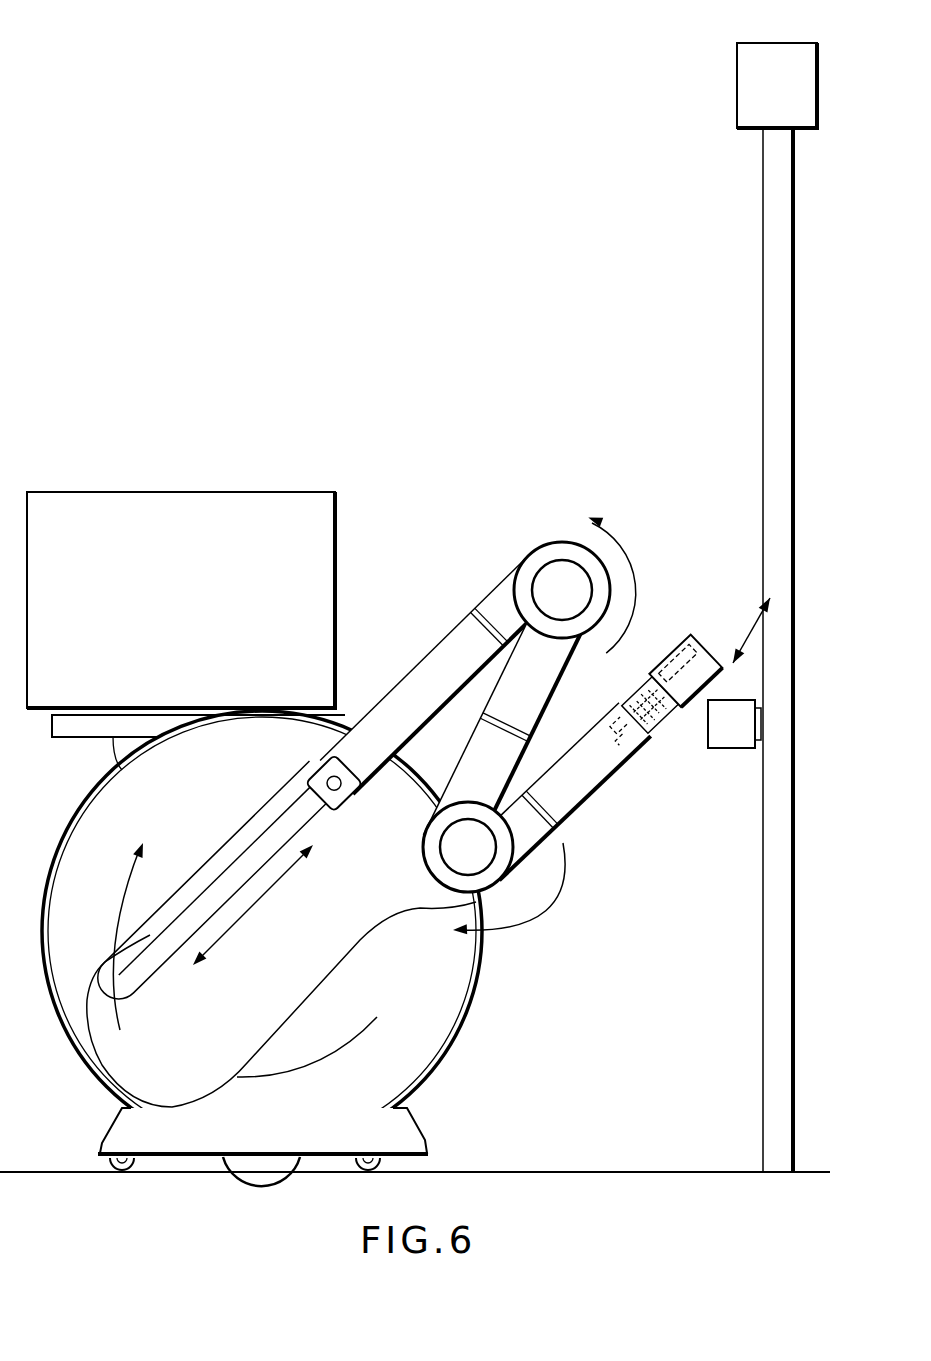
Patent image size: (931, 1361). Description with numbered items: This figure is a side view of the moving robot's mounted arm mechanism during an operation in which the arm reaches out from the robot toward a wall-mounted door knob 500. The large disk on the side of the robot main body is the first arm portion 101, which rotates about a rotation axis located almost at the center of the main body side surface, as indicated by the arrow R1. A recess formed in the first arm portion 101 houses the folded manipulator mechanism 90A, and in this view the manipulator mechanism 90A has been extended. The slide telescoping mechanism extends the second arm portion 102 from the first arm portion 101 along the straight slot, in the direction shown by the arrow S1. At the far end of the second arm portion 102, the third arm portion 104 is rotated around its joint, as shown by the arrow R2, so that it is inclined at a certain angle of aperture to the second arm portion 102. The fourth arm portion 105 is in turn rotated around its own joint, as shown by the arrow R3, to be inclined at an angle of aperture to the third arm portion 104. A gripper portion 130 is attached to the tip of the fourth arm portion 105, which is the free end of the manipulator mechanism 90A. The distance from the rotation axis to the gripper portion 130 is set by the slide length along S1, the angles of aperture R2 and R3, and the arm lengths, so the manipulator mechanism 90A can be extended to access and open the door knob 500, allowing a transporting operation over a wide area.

The manipulator mechanism 90A is at (473, 572).
The first arm portion 101 is at (450, 1020).
The second arm portion 102 is at (350, 766).
The third arm portion 104 is at (552, 680).
The fourth arm portion 105 is at (593, 783).
The gripper portion 130 is at (690, 628).
The door knob 500 is at (730, 745).
The arrow R1 is at (125, 881).
The arrow R2 is at (628, 552).
The arrow R3 is at (530, 928).
The arrow S1 is at (282, 878).